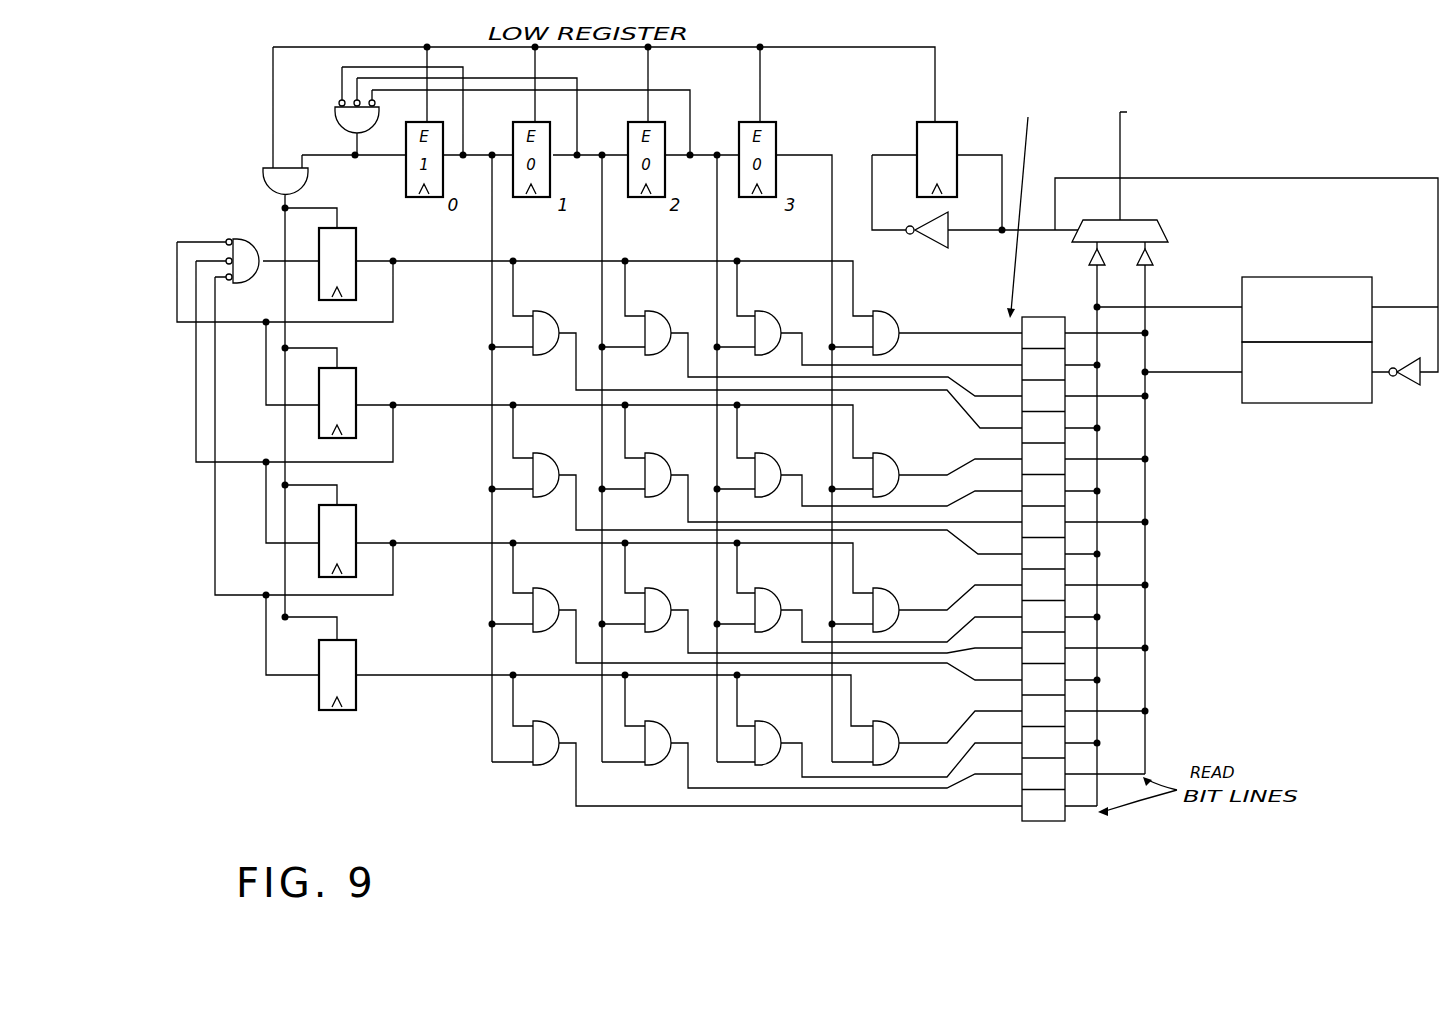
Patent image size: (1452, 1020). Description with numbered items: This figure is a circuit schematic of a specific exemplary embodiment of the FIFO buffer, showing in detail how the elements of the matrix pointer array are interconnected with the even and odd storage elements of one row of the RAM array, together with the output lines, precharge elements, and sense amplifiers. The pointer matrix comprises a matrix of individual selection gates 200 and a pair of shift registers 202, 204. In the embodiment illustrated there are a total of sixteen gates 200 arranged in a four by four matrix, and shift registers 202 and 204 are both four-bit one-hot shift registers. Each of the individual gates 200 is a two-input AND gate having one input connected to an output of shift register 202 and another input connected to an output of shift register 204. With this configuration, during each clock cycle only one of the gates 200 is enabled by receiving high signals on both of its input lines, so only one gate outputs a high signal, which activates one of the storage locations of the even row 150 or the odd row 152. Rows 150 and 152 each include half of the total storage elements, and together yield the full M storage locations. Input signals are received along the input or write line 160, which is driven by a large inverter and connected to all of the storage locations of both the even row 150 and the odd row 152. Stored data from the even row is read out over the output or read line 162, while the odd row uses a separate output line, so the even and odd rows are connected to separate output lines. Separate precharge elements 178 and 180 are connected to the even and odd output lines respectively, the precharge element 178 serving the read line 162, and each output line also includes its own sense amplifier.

The even row 150 is at (988, 605).
The odd row 152 is at (1040, 832).
The input or write line 160 is at (1098, 537).
The output or read line 162 is at (1145, 615).
The precharge element 178 is at (1320, 278).
The precharge element 180 is at (1343, 404).
The selection gates 200 is at (542, 767).
The shift register 202 is at (1205, 73).
The shift register 204 is at (335, 740).